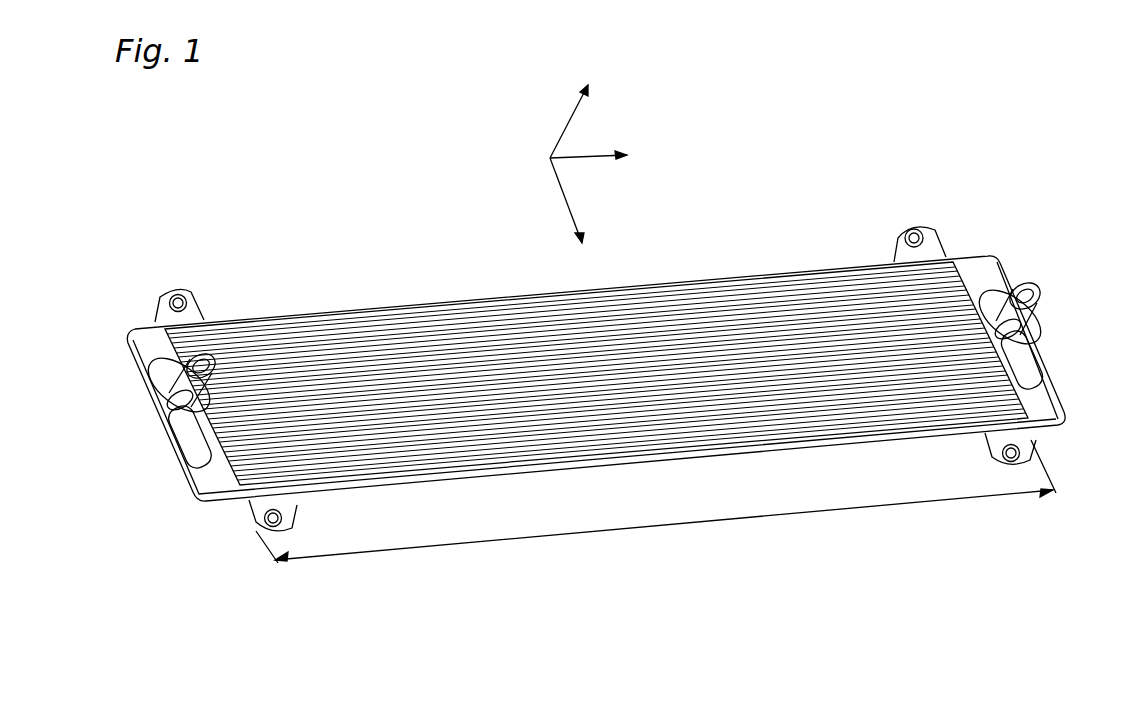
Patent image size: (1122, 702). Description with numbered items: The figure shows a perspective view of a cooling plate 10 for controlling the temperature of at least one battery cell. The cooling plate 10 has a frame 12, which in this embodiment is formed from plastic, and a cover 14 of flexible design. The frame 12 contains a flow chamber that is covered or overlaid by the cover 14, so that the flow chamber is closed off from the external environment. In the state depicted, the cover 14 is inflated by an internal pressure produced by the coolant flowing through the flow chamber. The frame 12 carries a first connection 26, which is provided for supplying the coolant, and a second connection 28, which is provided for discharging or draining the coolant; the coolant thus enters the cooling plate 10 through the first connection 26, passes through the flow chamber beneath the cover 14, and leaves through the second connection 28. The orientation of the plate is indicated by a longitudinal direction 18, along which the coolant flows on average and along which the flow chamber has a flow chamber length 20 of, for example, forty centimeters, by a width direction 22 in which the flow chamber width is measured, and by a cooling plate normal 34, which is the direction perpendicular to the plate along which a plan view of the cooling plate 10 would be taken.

The cooling plate 10 is at (940, 148).
The frame 12 is at (163, 300).
The cover of flexible design 14 is at (325, 315).
The longitudinal direction 18 is at (585, 150).
The flow chamber length 20 is at (666, 526).
The width direction 22 is at (563, 195).
The first connection 26 is at (148, 388).
The second connection 28 is at (1040, 322).
The cooling plate normal 34 is at (568, 123).